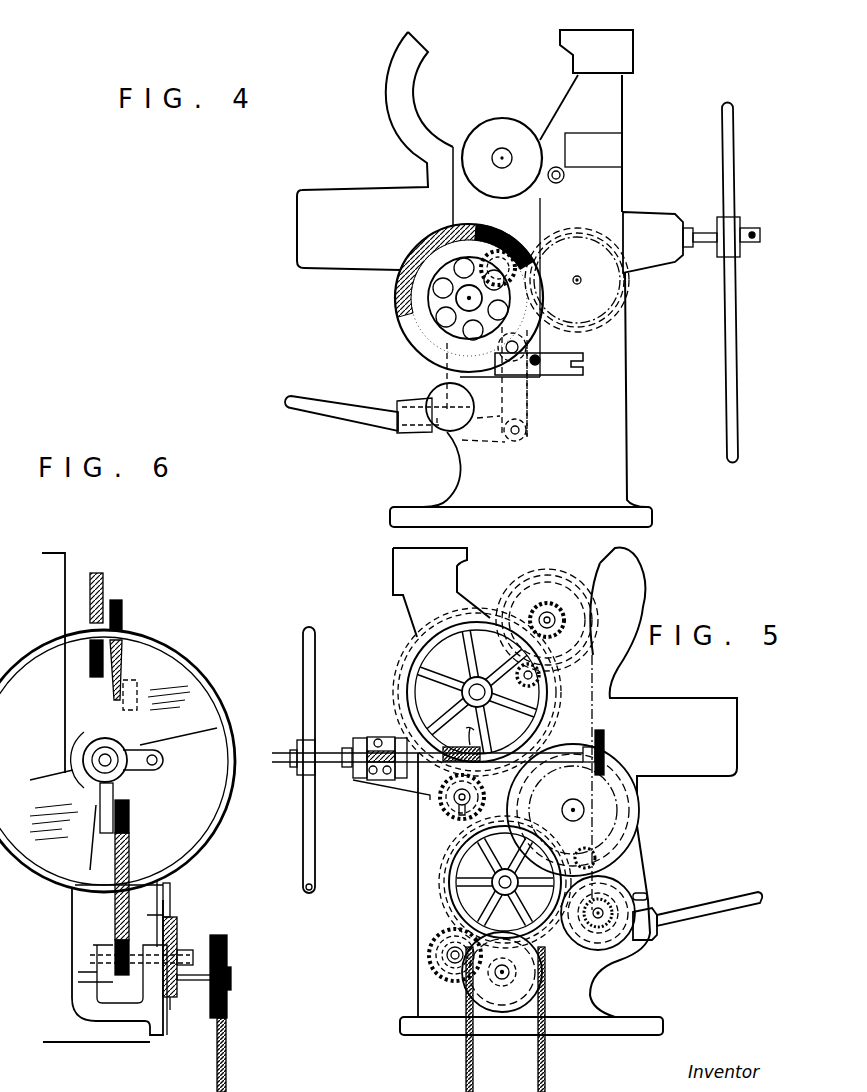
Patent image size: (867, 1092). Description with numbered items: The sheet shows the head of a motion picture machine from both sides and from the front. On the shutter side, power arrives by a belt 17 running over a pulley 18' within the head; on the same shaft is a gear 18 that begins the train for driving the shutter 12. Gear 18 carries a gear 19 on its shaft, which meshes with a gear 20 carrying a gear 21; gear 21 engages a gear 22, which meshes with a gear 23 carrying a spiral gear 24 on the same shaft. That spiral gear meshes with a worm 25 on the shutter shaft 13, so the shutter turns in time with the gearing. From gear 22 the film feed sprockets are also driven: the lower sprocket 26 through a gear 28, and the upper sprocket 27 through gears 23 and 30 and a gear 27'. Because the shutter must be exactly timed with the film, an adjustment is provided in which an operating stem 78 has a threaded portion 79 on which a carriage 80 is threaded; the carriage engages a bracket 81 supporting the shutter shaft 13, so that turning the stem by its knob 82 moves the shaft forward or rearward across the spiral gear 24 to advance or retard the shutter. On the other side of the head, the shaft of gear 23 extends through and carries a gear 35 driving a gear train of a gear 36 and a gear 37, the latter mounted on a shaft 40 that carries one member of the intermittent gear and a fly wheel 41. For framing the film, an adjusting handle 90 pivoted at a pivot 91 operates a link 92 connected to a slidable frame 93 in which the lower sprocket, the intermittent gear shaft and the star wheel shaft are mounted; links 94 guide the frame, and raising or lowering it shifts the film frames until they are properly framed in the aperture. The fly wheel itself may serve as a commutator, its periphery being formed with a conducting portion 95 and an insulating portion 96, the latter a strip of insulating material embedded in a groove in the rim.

In FIG. 6, the shutter 12 is at (195, 700).
In FIG. 5, the shutter 12 is at (312, 680).
In FIG. 6, the shutter shaft 13 is at (102, 756).
In FIG. 5, the shutter shaft 13 is at (327, 752).
In FIG. 6, the belt 17 is at (228, 1048).
In FIG. 5, the belt 17 is at (545, 1072).
In FIG. 5, the gear 18 is at (523, 972).
In FIG. 6, the pulley 18' is at (220, 976).
In FIG. 5, the pulley 18' is at (490, 1019).
In FIG. 5, the gear 19 is at (520, 973).
In FIG. 6, the gear 20 is at (172, 1000).
In FIG. 5, the gear 20 is at (444, 984).
In FIG. 6, the gear 21 is at (122, 975).
In FIG. 5, the gear 21 is at (443, 960).
In FIG. 6, the gear 22 is at (130, 850).
In FIG. 5, the gear 22 is at (440, 903).
In FIG. 6, the gear 23 is at (130, 815).
In FIG. 5, the gear 23 is at (460, 810).
In FIG. 5, the spiral gear 24 is at (437, 803).
In FIG. 5, the worm 25 is at (477, 748).
In FIG. 5, the lower feed sprocket 26 is at (633, 890).
In FIG. 5, the upper feed sprocket 27 is at (547, 607).
In FIG. 5, the gear 27' is at (540, 633).
In FIG. 5, the gear 28 is at (617, 878).
In FIG. 5, the gear 30 is at (410, 660).
In FIG. 4, the gear 35 is at (605, 232).
In FIG. 4, the gear 36 is at (498, 250).
In FIG. 4, the gear 37 is at (433, 260).
In FIG. 4, the shaft 40 is at (465, 298).
In FIG. 4, the fly wheel 41 is at (514, 338).
In FIG. 5, the operating stem 78 is at (540, 753).
In FIG. 5, the threaded portion 79 is at (360, 782).
In FIG. 5, the carriage 80 is at (382, 737).
In FIG. 5, the bracket 81 is at (360, 737).
In FIG. 5, the knob 82 is at (605, 740).
In FIG. 4, the adjusting handle 90 is at (340, 410).
In FIG. 4, the pivot 91 is at (468, 437).
In FIG. 4, the link 92 is at (520, 405).
In FIG. 4, the slidable frame 93 is at (535, 222).
In FIG. 4, the links 94 is at (555, 372).
In FIG. 4, the conducting portion 95 is at (532, 213).
In FIG. 4, the insulating portion 96 is at (447, 232).